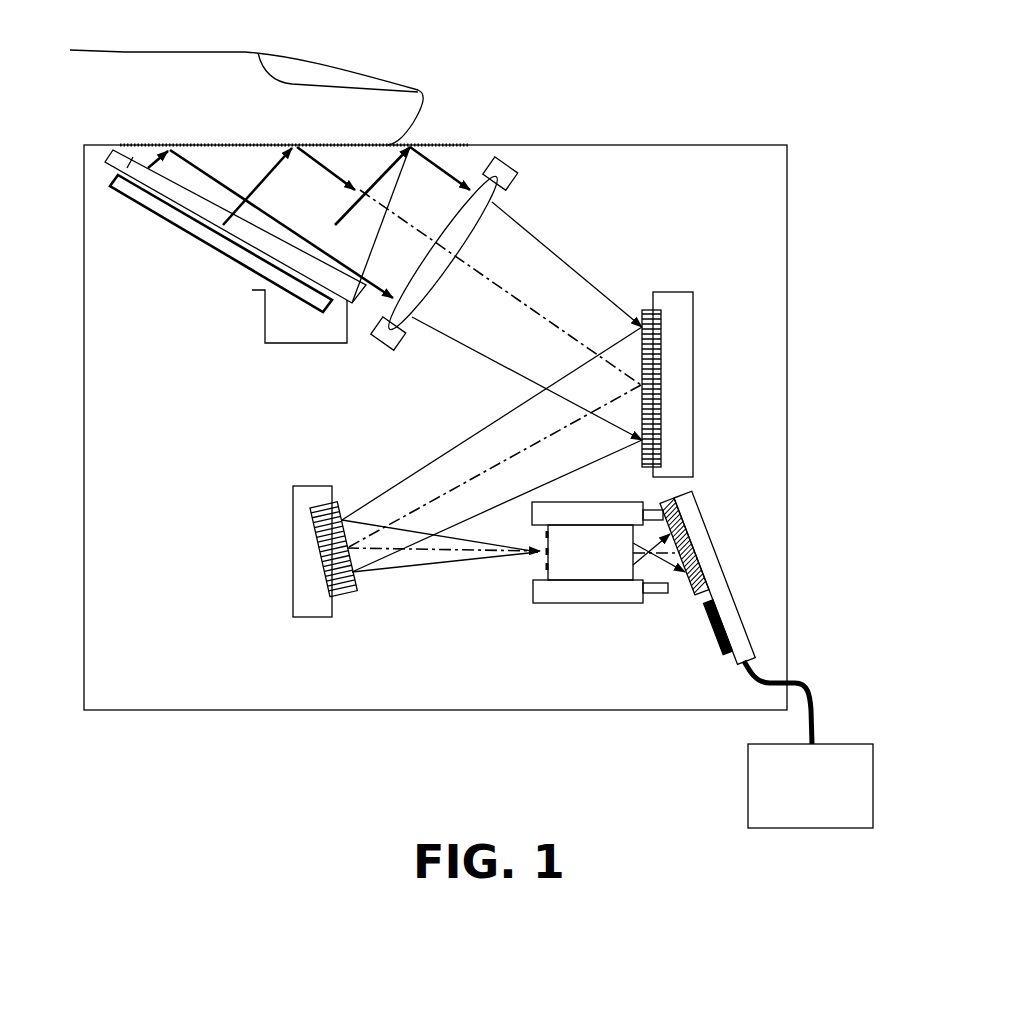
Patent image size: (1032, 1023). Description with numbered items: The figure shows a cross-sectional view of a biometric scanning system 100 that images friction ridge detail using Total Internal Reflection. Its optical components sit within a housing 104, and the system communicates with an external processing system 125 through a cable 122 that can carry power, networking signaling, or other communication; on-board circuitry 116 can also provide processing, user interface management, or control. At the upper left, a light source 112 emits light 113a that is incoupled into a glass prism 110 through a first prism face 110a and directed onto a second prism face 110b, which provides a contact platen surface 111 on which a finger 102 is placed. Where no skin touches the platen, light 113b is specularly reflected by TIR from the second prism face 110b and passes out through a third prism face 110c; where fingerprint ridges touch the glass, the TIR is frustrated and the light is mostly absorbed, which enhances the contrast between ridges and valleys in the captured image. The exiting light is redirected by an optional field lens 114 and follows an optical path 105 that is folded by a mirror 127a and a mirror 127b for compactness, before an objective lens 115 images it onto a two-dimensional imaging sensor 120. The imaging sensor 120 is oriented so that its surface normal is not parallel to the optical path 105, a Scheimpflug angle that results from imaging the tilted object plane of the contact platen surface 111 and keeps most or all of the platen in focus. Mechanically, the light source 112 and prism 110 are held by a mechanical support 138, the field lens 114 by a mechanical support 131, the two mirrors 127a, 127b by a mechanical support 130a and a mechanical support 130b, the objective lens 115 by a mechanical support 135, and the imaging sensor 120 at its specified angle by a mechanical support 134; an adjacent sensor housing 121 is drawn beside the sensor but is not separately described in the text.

The biometric scanning system 100 is at (568, 48).
The finger 102 is at (256, 97).
The housing 104 is at (689, 145).
The optical path 105 is at (548, 322).
The glass prism 110 is at (388, 251).
The first prism face 110a is at (175, 198).
The second prism face 110b is at (290, 190).
The third prism face 110c is at (462, 148).
The contact platen surface 111 is at (151, 143).
The light source 112 is at (200, 250).
The light 113a is at (302, 168).
The light 113b is at (338, 165).
The field lens 114 is at (478, 232).
The objective lens 115 is at (618, 570).
The on-board circuitry 116 is at (712, 635).
The imaging sensor 120 is at (688, 500).
The sensor housing 121 is at (726, 580).
The cable 122 is at (812, 696).
The processing system 125 is at (830, 799).
The mirror 127a is at (642, 310).
The mirror 127b is at (348, 600).
The mechanical support 130a is at (694, 298).
The mechanical support 130b is at (292, 522).
The mechanical support 131 is at (518, 190).
The mechanical support 134 is at (657, 510).
The mechanical support 135 is at (606, 503).
The mechanical support 138 is at (319, 334).